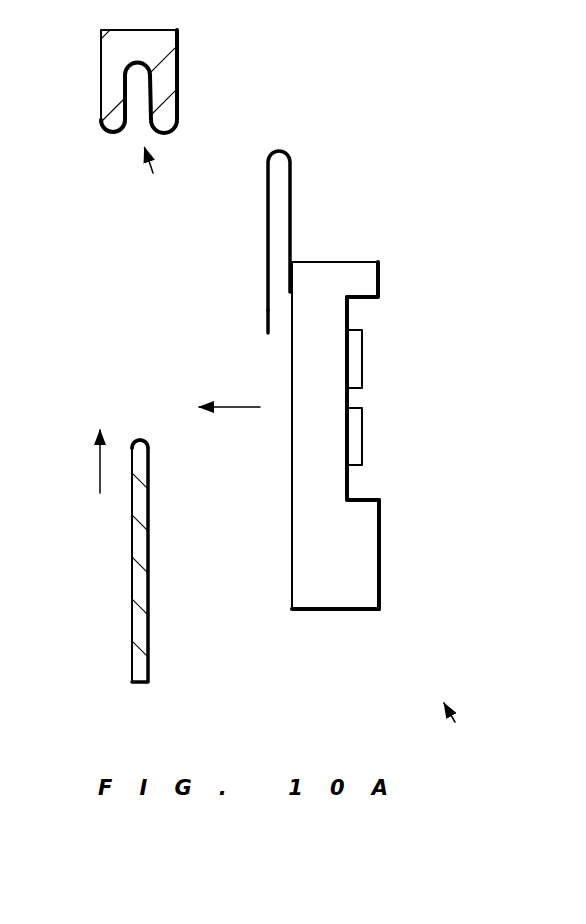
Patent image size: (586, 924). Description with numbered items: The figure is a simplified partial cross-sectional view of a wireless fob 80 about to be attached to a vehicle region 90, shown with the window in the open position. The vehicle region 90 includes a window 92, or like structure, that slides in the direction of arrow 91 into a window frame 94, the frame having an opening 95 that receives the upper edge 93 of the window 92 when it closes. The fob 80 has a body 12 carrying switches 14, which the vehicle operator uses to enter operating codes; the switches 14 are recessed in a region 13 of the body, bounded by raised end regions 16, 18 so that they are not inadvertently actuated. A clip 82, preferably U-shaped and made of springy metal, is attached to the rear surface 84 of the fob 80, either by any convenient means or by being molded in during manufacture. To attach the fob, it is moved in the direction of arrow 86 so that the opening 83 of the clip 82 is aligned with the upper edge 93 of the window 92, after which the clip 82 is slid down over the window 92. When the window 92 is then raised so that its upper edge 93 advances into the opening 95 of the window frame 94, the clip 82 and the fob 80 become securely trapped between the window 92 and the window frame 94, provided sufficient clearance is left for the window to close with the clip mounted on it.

The body portion 12 is at (350, 548).
The recessed region 13 is at (350, 485).
The switches 14 is at (363, 355).
The raised end region 16 is at (360, 268).
The raised end region 18 is at (330, 602).
The wireless fob 80 is at (363, 404).
The clip 82 is at (292, 190).
The opening 83 is at (278, 330).
The rear surface 84 is at (290, 530).
The arrow 86 is at (233, 408).
The vehicle region 90 is at (464, 726).
The arrow 91 is at (100, 462).
The window 92 is at (142, 545).
The upper edge 93 is at (137, 440).
The window frame 94 is at (107, 53).
The opening 95 is at (159, 173).